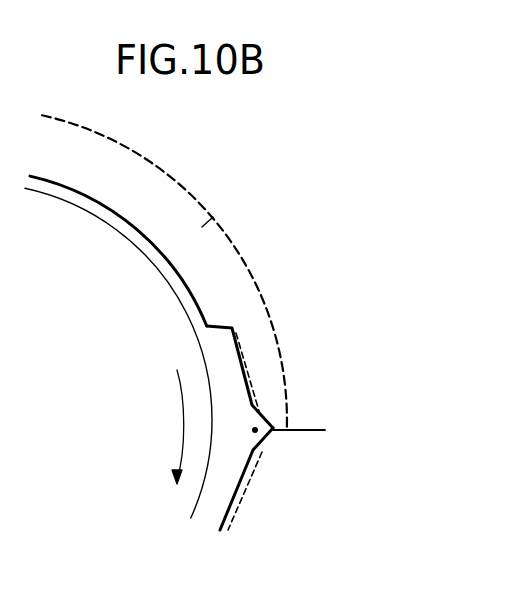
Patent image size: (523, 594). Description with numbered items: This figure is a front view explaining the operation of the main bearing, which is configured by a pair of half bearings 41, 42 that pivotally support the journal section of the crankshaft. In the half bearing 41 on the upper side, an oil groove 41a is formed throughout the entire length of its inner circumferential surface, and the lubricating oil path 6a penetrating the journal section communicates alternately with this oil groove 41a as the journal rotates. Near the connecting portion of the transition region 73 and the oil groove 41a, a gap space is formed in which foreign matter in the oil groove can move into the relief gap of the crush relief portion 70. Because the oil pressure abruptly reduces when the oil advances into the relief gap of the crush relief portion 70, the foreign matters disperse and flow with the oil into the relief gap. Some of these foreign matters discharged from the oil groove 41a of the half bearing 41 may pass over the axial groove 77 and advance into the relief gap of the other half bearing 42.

The lubricating oil path 6a is at (100, 218).
The half bearing 41 is at (300, 291).
The oil groove 41a is at (210, 219).
The half bearing 42 is at (291, 475).
The crush relief portion 70 is at (236, 360).
The transition region 73 is at (220, 335).
The axial groove 77 is at (246, 437).